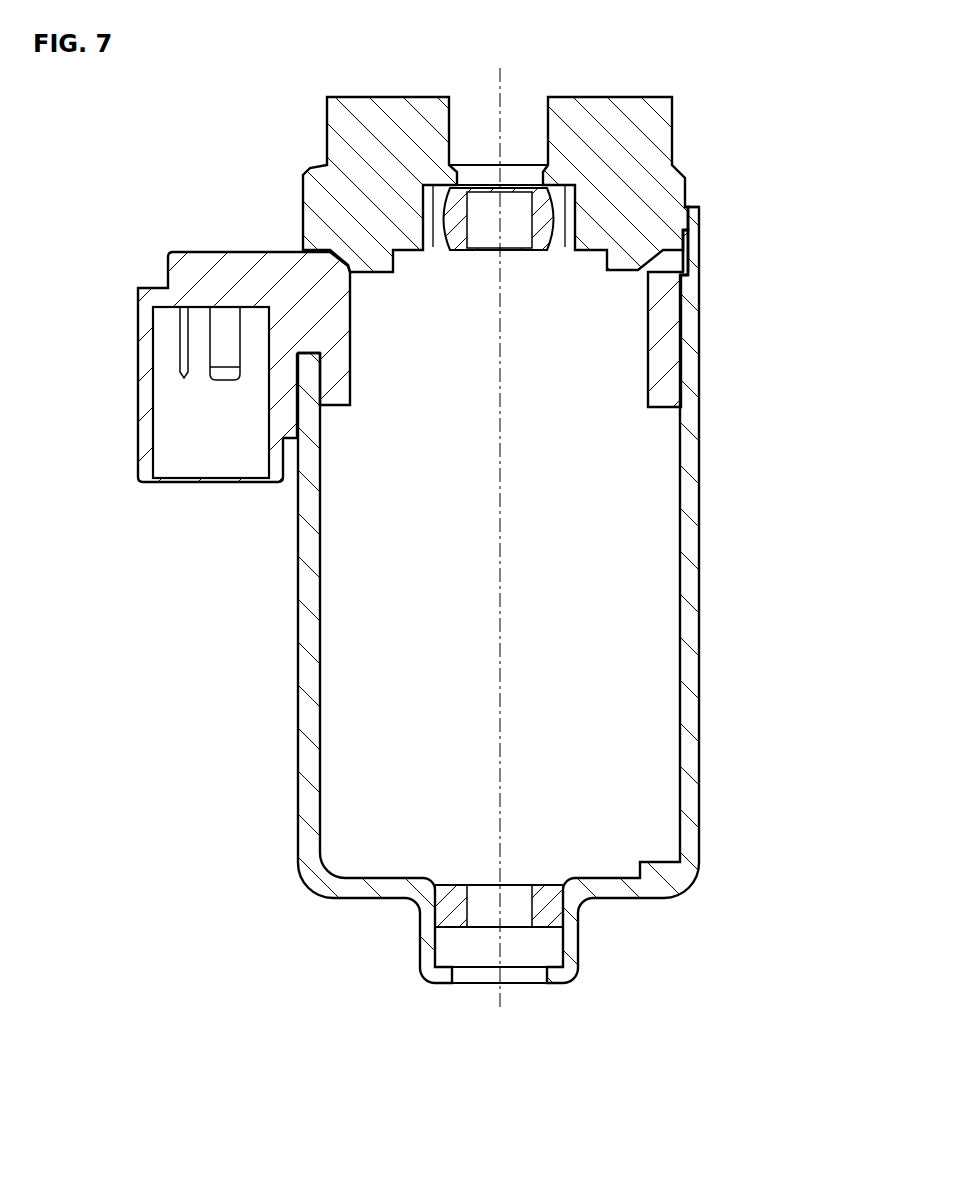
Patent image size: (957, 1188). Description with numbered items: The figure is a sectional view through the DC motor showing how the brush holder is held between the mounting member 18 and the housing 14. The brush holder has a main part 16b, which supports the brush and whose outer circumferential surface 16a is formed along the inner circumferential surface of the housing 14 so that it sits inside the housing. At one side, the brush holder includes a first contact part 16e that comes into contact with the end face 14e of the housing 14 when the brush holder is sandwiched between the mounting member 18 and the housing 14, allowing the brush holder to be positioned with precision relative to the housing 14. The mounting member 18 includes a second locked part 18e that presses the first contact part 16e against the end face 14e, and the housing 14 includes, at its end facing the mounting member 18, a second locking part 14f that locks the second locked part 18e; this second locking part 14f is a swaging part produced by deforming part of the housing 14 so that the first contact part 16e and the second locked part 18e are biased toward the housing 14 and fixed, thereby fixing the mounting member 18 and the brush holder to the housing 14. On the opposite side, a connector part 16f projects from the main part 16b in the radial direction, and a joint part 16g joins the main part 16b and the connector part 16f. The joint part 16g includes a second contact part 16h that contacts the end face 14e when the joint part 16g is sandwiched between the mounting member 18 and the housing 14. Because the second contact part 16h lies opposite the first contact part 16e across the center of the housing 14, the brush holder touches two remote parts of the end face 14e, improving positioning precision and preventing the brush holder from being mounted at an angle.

The housing 14 is at (700, 607).
The end face 14e is at (316, 352).
The second locking part 14f is at (699, 218).
The outer circumferential surface 16a is at (682, 352).
The main part 16b is at (352, 317).
The first contact part 16e is at (688, 262).
The connector part 16f is at (182, 250).
The joint part 16g is at (312, 325).
The second contact part 16h is at (263, 440).
The mounting member 18 is at (672, 120).
The second locked part 18e is at (688, 242).